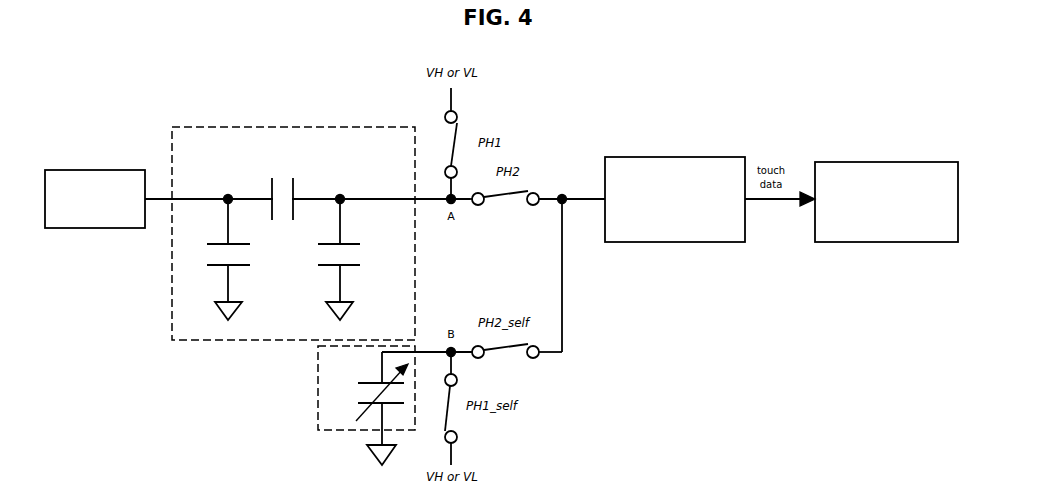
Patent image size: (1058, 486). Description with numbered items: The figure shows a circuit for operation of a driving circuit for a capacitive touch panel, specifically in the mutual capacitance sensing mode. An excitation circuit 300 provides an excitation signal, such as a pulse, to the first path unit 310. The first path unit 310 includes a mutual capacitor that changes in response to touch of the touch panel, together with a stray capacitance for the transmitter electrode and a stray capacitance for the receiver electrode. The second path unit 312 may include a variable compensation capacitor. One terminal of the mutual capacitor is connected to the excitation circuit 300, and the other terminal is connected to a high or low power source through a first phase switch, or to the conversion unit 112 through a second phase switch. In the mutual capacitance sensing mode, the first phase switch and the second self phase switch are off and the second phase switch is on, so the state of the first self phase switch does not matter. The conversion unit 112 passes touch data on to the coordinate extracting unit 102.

The excitation circuit 300 is at (94, 170).
The first path unit 310 is at (265, 127).
The second path unit 312 is at (318, 388).
The conversion unit 112 is at (670, 157).
The coordinate extracting unit 102 is at (885, 162).